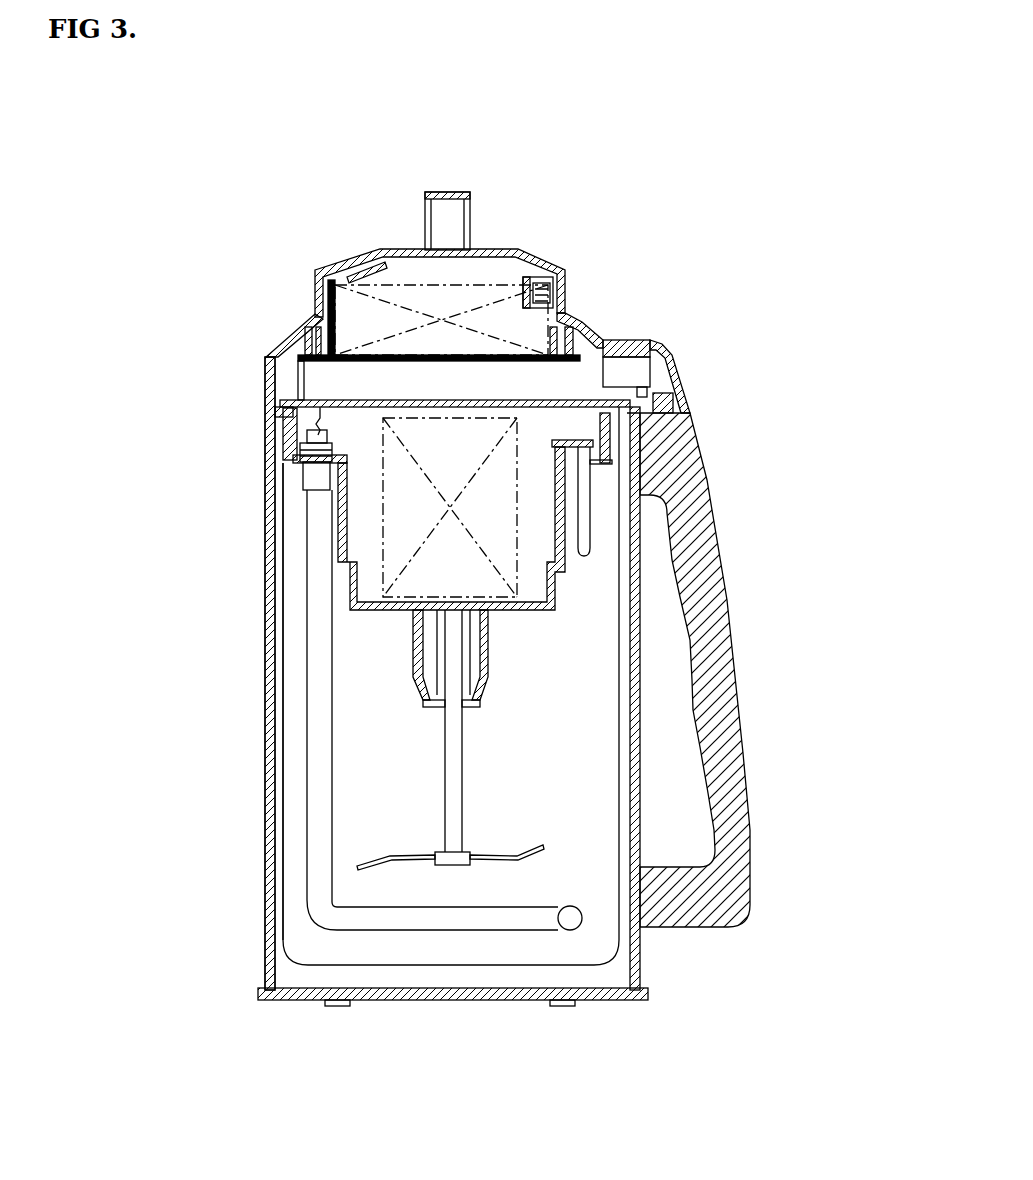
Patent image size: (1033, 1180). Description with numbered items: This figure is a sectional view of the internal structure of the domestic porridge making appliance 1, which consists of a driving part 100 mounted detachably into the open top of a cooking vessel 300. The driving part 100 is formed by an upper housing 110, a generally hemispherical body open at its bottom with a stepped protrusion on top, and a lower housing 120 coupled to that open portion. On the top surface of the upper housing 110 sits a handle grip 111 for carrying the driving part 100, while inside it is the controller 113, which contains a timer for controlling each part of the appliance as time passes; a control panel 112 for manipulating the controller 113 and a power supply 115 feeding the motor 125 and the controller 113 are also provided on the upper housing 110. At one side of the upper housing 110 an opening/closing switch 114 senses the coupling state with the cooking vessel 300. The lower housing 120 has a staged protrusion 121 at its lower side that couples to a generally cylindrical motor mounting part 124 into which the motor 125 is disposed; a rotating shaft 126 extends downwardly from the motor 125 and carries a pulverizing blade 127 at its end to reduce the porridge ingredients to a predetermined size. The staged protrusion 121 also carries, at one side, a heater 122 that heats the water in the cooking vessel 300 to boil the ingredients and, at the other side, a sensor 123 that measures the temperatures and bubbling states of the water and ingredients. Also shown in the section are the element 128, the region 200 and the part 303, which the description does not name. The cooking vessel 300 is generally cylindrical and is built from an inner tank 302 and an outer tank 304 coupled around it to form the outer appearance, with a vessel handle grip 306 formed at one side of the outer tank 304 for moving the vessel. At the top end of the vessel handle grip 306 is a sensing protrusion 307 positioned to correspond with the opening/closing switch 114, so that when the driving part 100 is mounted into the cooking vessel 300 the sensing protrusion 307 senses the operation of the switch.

The domestic porridge making appliance 1 is at (705, 187).
The driving part 100 is at (512, 248).
The upper housing 110 is at (277, 357).
The handle grip 111 is at (455, 196).
The control panel 112 is at (356, 265).
The controller 113 is at (310, 303).
The opening/closing switch 114 is at (634, 367).
The power supply 115 is at (557, 300).
The lower housing 120 is at (292, 458).
The staged protrusion 121 is at (612, 482).
The heater 122 is at (549, 917).
The sensor 123 is at (588, 528).
The motor mounting part 124 is at (527, 600).
The motor 125 is at (570, 568).
The rotating shaft 126 is at (447, 782).
The pulverizing blade 127 is at (362, 867).
The shaft guide 128 is at (550, 565).
The container 200 is at (560, 778).
The cooking vessel 300 is at (260, 553).
The inner tank 302 is at (282, 700).
The base 303 is at (617, 973).
The outer tank 304 is at (270, 645).
The vessel handle grip 306 is at (723, 729).
The sensing protrusion 307 is at (650, 398).